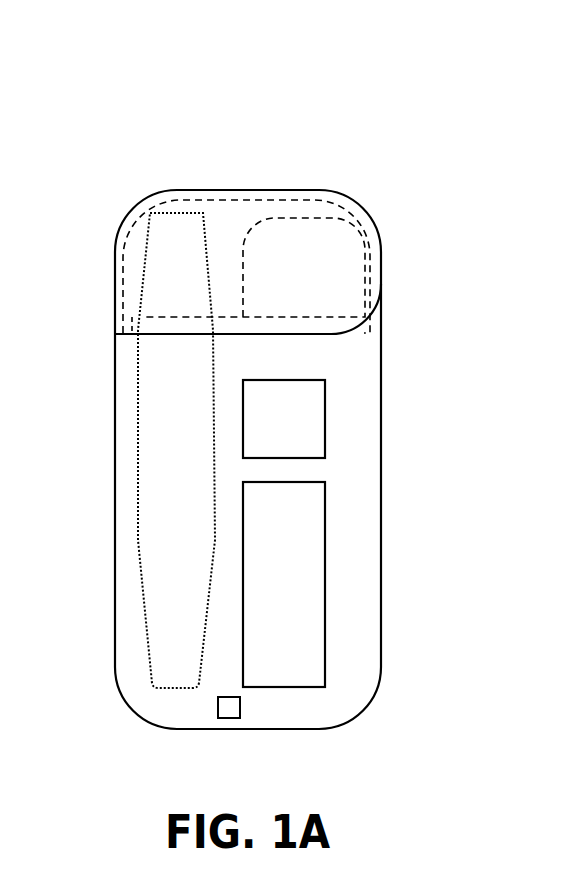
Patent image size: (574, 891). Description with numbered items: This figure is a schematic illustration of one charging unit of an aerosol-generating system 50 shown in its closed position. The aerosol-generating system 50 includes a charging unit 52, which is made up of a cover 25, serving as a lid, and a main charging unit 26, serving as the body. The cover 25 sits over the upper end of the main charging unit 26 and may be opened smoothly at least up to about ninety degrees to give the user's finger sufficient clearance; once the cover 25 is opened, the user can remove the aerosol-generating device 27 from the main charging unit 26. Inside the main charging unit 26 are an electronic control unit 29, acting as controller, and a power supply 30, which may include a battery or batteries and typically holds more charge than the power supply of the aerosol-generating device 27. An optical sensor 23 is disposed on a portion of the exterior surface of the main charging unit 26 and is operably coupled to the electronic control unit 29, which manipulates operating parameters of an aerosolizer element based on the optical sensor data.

The aerosol-generating system 50 is at (170, 88).
The cover 25 is at (376, 232).
The charging unit 52 is at (392, 328).
The main charging unit 26 is at (368, 422).
The aerosol-generating device 27 is at (138, 465).
The electronic control unit 29 is at (313, 437).
The power supply 30 is at (313, 560).
The optical sensor 23 is at (229, 718).